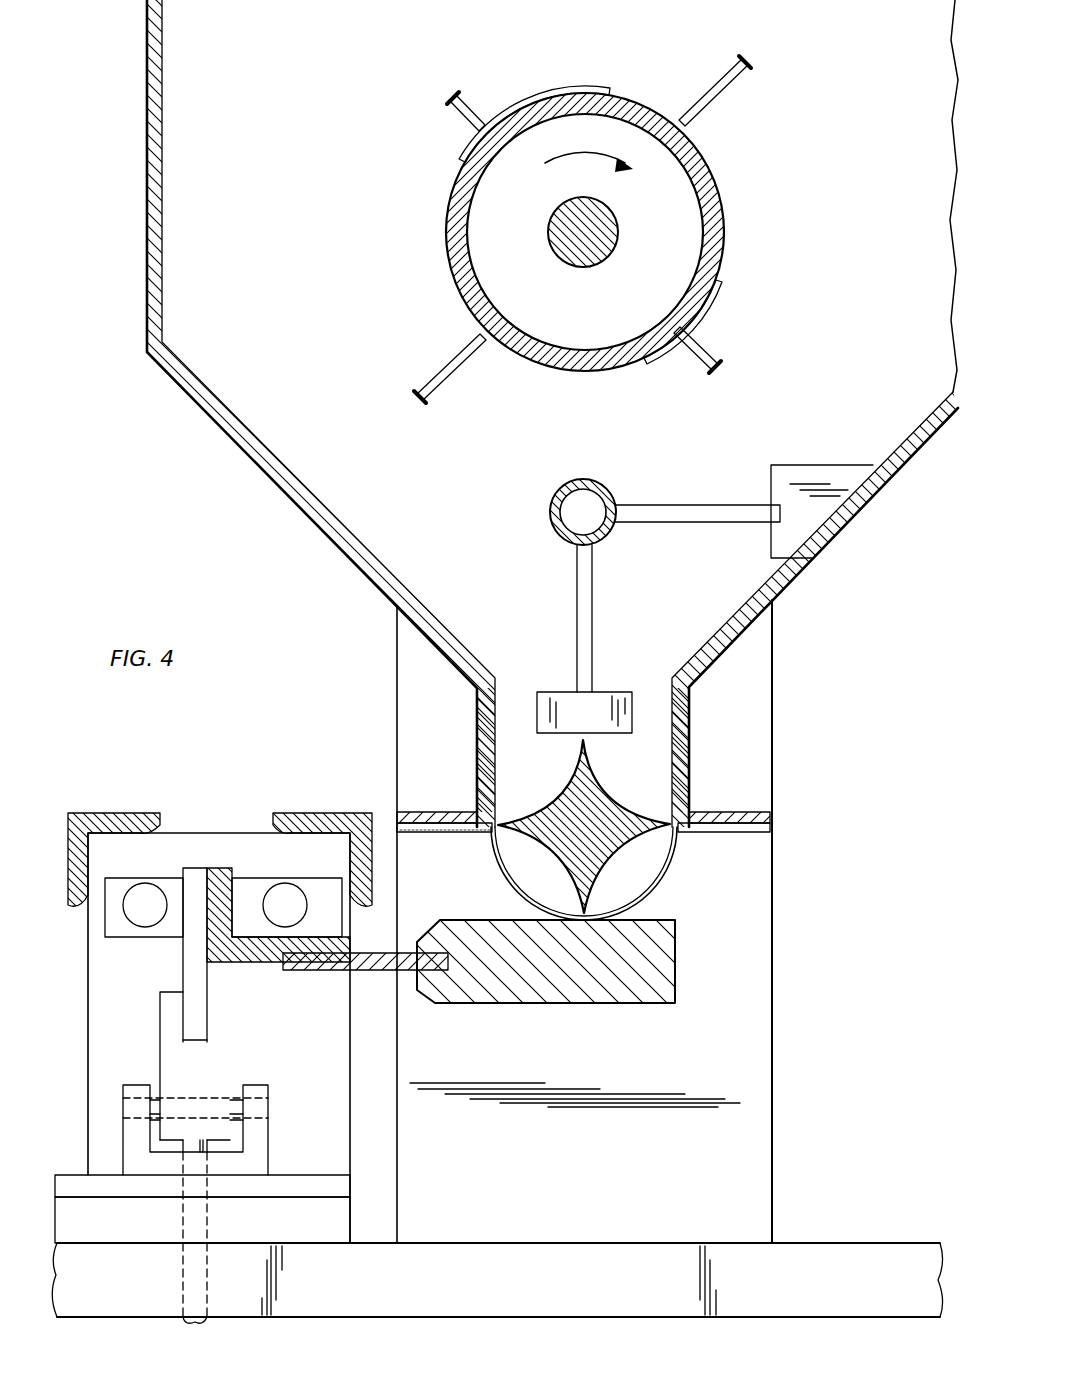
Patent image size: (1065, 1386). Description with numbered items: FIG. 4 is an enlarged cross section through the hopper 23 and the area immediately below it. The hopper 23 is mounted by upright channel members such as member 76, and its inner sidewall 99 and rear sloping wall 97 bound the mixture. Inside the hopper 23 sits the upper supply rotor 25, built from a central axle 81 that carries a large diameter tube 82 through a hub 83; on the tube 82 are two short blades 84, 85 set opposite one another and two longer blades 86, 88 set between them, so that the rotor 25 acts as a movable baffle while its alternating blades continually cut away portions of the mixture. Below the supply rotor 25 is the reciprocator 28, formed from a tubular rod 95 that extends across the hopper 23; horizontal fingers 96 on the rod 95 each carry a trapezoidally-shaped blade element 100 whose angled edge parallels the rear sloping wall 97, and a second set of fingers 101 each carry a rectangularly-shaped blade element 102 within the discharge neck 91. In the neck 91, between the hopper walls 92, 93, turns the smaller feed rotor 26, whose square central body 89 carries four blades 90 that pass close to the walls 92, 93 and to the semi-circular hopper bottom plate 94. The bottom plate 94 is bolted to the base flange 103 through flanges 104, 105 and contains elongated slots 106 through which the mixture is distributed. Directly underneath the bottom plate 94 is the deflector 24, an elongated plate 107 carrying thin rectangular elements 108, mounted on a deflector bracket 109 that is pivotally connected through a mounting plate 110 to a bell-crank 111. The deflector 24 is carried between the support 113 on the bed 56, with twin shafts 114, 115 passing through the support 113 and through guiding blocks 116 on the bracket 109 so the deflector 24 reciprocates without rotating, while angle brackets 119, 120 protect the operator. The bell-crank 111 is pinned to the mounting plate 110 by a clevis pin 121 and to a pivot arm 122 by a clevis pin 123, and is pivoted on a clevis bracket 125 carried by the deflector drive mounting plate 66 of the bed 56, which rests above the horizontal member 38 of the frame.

The hopper 23 is at (152, 279).
The inner sidewall 99 is at (312, 211).
The rear sloping wall 97 is at (845, 516).
The supply rotor 25 is at (728, 193).
The hub 83 is at (664, 262).
The central axle 81 is at (612, 250).
The short rotor blade 84 is at (458, 106).
The large diameter tube 82 is at (706, 270).
The long rotor blade 86 is at (750, 82).
The long rotor blade 88 is at (430, 402).
The short rotor blade 85 is at (716, 360).
The trapezoidally-shaped blade element 100 is at (787, 460).
The tubular rod 95 is at (606, 492).
The reciprocator 28 is at (614, 542).
The finger 96 is at (736, 510).
The finger 101 is at (578, 606).
The discharge neck 91 is at (606, 670).
The rectangularly-shaped blade element 102 is at (565, 702).
The upright channel member 76 is at (765, 682).
The support 113 is at (345, 1066).
The hopper wall 92 is at (485, 762).
The hopper wall 93 is at (684, 764).
The flange 104 is at (420, 846).
The flange 105 is at (690, 846).
The base flange 103 is at (760, 812).
The hopper bottom plate 94 is at (660, 895).
The feed rotor 26 is at (608, 784).
The central body 89 is at (595, 850).
The blade 90 is at (576, 758).
The elongated slot 106 is at (565, 906).
The rectangular element 108 is at (660, 976).
The deflector 24 is at (619, 1000).
The elongated plate 107 is at (417, 986).
The deflector bracket 109 is at (346, 954).
The bed 56 is at (70, 1163).
The angle bracket 119 is at (112, 812).
The angle bracket 120 is at (305, 812).
The guiding block 116 is at (158, 876).
The shaft 115 is at (320, 882).
The shaft 114 is at (150, 920).
The mounting plate 110 is at (205, 991).
The bell-crank 111 is at (220, 1040).
The clevis bracket 125 is at (262, 1138).
The clevis pin 121 is at (237, 1100).
The pivot arm 122 is at (196, 1222).
The clevis pin 123 is at (338, 1184).
The deflector drive mounting plate 66 is at (325, 1223).
The horizontal member 38 is at (555, 1250).